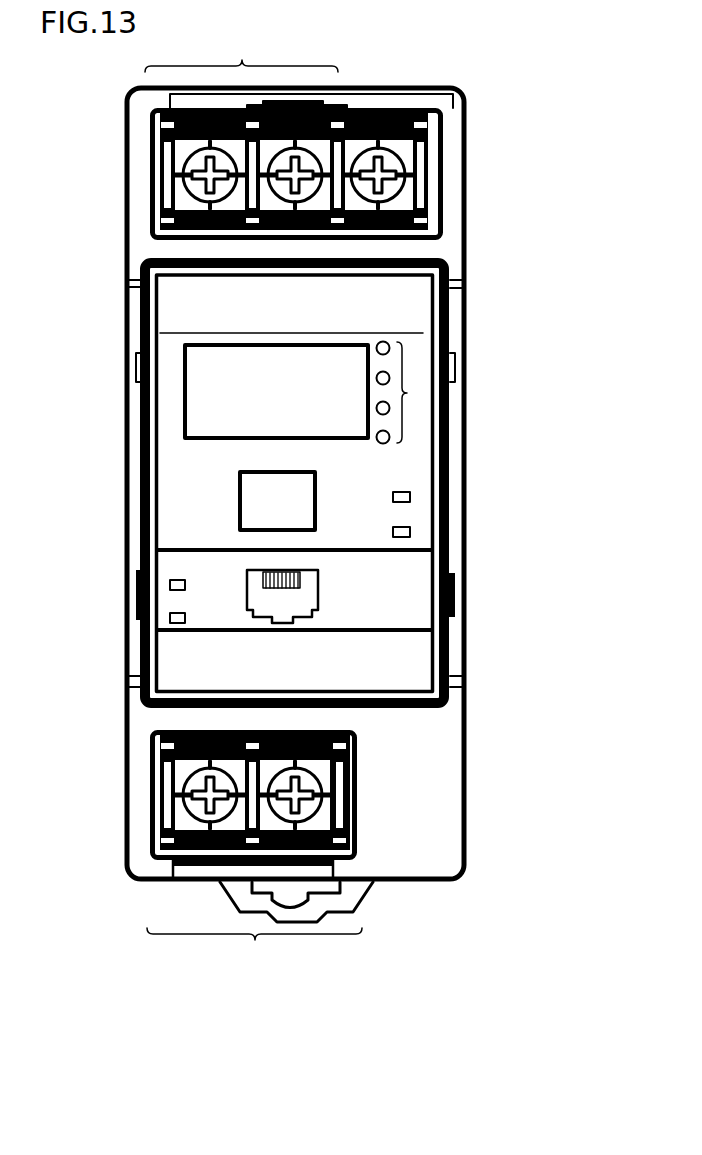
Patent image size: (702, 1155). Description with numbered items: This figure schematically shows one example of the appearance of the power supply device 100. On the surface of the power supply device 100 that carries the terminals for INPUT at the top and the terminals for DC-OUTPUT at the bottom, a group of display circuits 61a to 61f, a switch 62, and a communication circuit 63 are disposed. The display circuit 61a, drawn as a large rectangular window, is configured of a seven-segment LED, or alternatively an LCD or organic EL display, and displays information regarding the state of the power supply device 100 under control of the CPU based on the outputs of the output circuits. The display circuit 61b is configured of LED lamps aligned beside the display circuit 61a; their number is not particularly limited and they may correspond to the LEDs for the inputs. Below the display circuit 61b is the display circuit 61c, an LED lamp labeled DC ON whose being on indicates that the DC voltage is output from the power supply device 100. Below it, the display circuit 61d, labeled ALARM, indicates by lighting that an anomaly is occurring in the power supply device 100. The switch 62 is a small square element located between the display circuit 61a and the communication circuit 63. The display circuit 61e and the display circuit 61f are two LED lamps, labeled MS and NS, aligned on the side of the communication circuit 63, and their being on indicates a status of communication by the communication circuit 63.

The power supply device 100 is at (505, 112).
The display circuit 61a is at (185, 418).
The display circuit 61b is at (407, 393).
The display circuit 61c is at (411, 497).
The display circuit 61d is at (411, 532).
The display circuit 61e is at (169, 585).
The display circuit 61f is at (169, 618).
The switch 62 is at (318, 500).
The communication circuit 63 is at (320, 590).